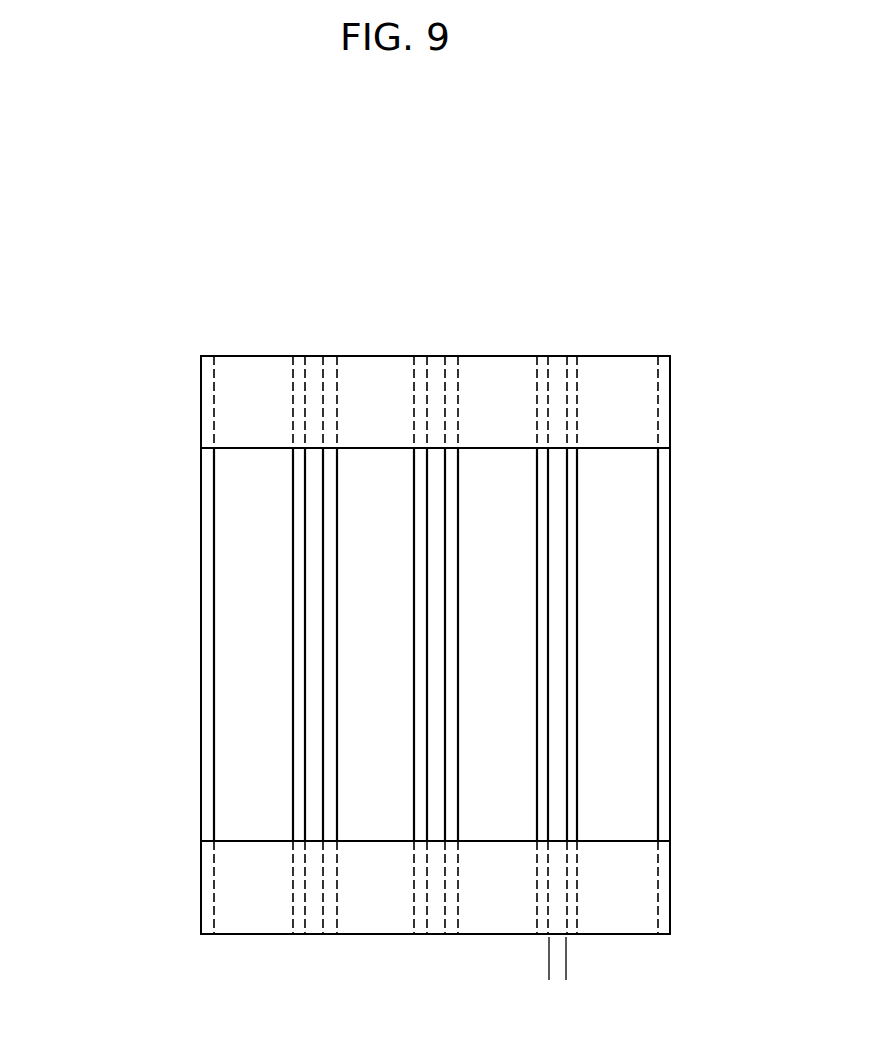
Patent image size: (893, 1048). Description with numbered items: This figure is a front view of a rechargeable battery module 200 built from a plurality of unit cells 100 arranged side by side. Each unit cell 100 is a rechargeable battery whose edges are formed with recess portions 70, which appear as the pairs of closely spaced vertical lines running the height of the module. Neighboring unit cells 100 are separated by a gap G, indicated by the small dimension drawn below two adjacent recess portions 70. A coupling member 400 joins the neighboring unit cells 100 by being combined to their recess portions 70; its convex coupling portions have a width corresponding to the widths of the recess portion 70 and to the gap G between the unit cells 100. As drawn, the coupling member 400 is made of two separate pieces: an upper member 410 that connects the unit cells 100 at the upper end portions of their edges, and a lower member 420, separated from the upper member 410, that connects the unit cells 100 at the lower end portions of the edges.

The unit cell 100 is at (680, 687).
The rechargeable battery module 200 is at (483, 292).
The coupling member 400 is at (96, 473).
The upper member 410 is at (252, 449).
The lower member 420 is at (254, 840).
The recess portion 70 is at (542, 540).
The gap G is at (588, 971).